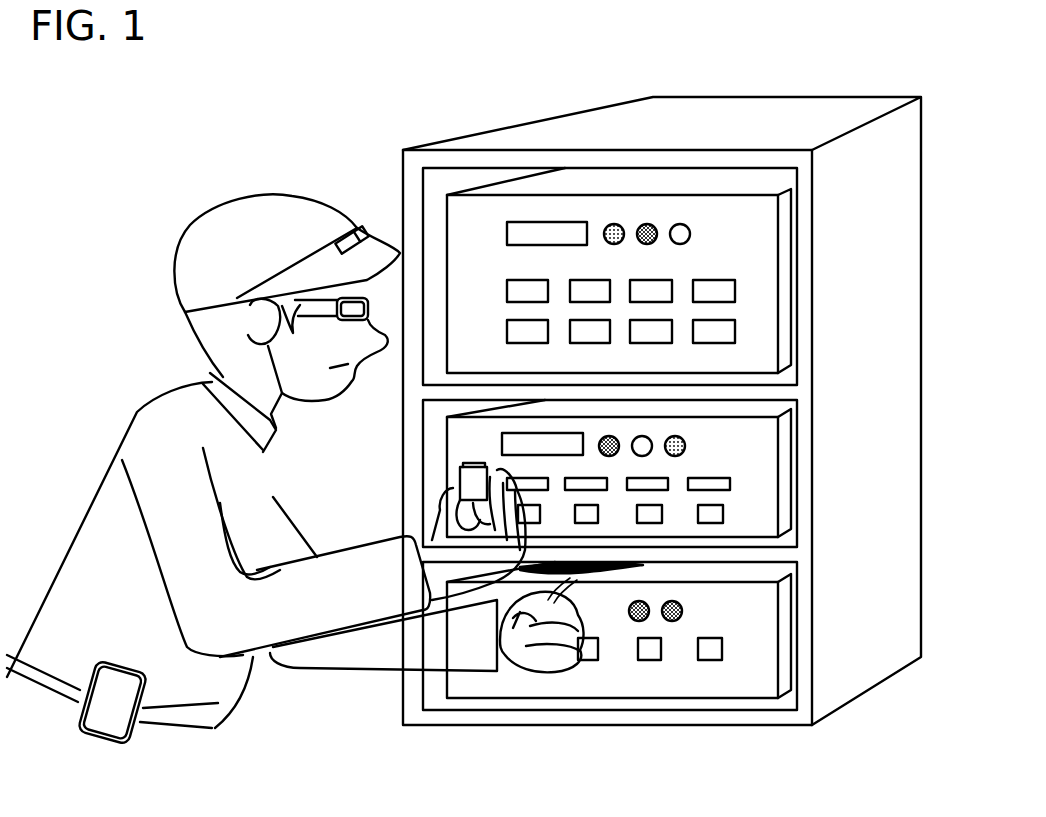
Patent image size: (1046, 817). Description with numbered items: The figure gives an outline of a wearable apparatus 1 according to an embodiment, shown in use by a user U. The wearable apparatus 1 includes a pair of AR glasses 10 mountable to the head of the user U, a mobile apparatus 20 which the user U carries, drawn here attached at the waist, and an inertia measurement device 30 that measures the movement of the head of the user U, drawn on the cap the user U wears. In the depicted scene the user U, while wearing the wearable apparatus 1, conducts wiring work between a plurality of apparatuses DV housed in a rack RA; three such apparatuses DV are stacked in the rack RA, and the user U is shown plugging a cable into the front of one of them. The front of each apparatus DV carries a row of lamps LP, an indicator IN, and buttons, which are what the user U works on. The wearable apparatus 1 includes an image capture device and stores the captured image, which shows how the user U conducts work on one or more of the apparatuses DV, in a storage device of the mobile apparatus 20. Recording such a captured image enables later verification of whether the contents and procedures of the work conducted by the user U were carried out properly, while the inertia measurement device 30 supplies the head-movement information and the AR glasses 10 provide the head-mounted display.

The wearable apparatus 1 is at (138, 207).
The AR glasses 10 is at (288, 310).
The mobile apparatus 20 is at (80, 712).
The inertia measurement device 30 is at (363, 227).
The user U is at (70, 553).
The rack RA is at (408, 160).
The apparatus DV is at (763, 318).
The lamp LP is at (702, 233).
The indicator (display) IN is at (497, 248).